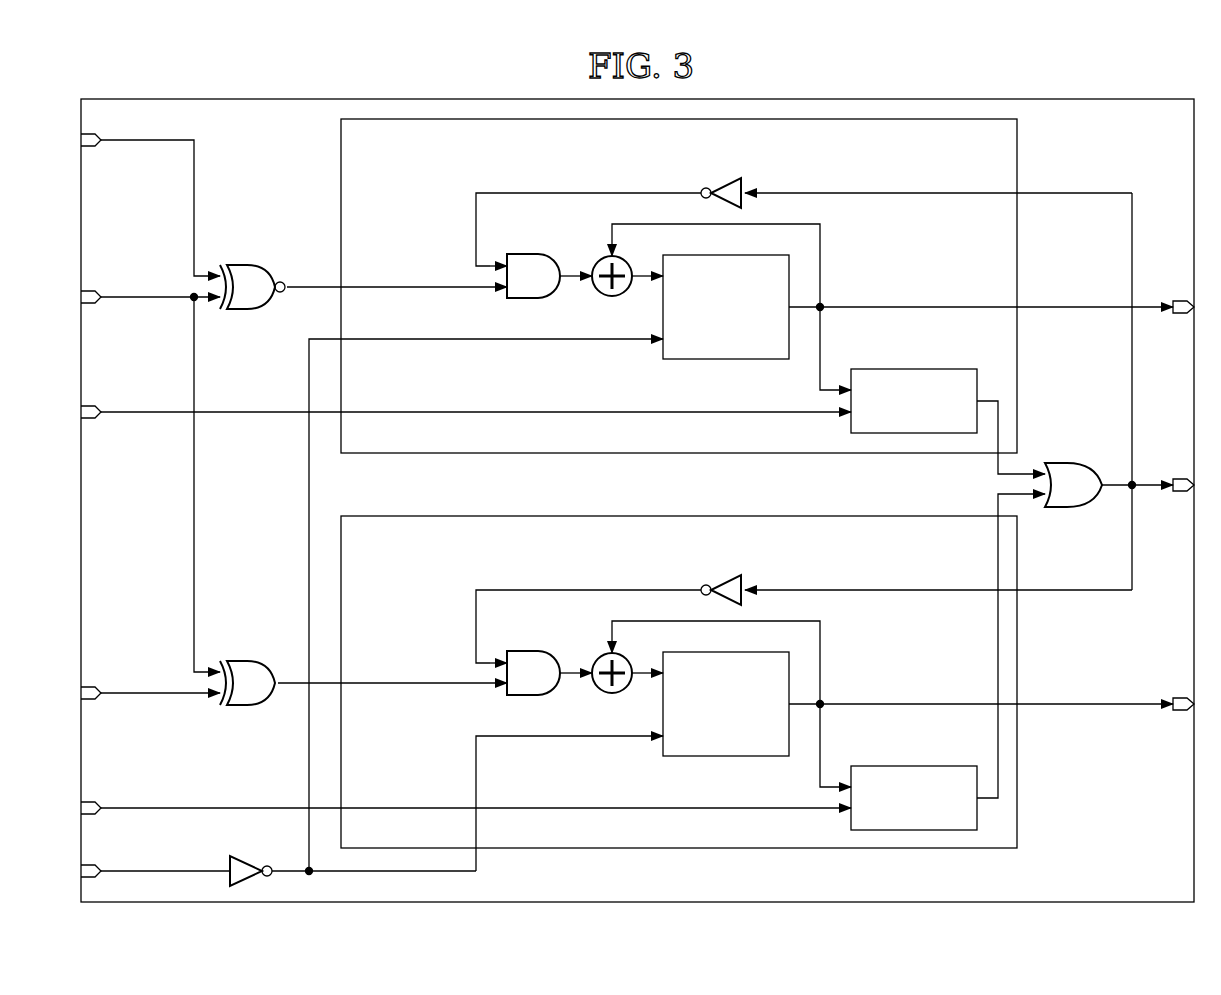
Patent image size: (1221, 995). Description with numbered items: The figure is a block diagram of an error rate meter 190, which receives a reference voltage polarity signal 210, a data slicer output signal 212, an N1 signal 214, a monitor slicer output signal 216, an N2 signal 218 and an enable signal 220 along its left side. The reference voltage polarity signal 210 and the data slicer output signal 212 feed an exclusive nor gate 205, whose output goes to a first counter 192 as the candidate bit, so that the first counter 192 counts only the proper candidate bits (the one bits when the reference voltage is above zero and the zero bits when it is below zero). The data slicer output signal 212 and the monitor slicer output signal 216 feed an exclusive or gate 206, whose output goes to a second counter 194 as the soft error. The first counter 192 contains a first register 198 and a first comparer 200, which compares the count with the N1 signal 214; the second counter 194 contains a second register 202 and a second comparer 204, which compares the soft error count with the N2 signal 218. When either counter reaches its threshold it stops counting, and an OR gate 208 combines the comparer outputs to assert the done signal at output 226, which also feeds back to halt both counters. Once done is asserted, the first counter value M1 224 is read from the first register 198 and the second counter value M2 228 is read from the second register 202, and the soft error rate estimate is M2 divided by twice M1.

The error rate meter 190 is at (318, 98).
The first counter 192 is at (1019, 170).
The second counter 194 is at (1019, 746).
The first register 198 is at (705, 339).
The first comparer 200 is at (915, 368).
The second register 202 is at (705, 736).
The second comparer 204 is at (915, 765).
The exclusive nor (XNOR) gate 205 is at (240, 262).
The exclusive or (XOR) gate 206 is at (242, 708).
The OR gate 208 is at (1070, 462).
The reference voltage polarity signal 210 is at (150, 148).
The data slicer output signal 212 is at (150, 303).
The N1 signal 214 is at (147, 418).
The monitor slicer output signal 216 is at (158, 700).
The N2 signal 218 is at (192, 806).
The enable signal 220 is at (200, 868).
The first counter value M1 224 is at (1180, 314).
The Done output 226 is at (1180, 492).
The second counter value M2 228 is at (1180, 711).